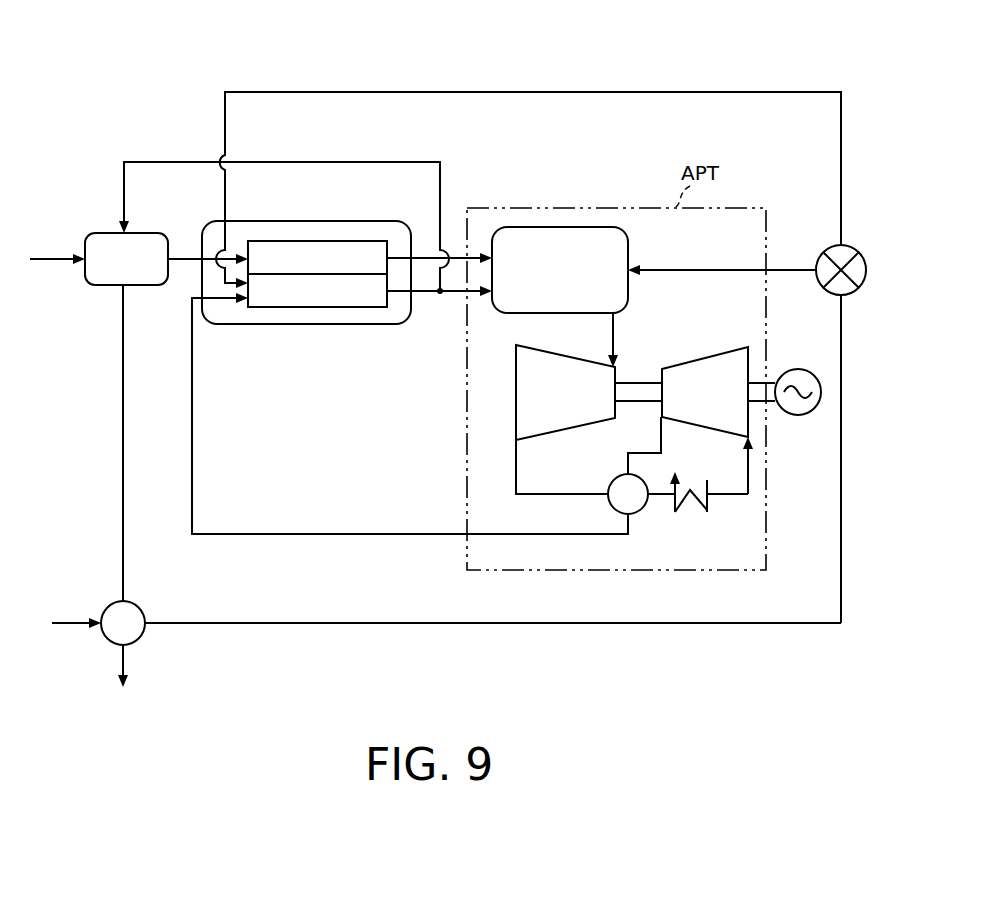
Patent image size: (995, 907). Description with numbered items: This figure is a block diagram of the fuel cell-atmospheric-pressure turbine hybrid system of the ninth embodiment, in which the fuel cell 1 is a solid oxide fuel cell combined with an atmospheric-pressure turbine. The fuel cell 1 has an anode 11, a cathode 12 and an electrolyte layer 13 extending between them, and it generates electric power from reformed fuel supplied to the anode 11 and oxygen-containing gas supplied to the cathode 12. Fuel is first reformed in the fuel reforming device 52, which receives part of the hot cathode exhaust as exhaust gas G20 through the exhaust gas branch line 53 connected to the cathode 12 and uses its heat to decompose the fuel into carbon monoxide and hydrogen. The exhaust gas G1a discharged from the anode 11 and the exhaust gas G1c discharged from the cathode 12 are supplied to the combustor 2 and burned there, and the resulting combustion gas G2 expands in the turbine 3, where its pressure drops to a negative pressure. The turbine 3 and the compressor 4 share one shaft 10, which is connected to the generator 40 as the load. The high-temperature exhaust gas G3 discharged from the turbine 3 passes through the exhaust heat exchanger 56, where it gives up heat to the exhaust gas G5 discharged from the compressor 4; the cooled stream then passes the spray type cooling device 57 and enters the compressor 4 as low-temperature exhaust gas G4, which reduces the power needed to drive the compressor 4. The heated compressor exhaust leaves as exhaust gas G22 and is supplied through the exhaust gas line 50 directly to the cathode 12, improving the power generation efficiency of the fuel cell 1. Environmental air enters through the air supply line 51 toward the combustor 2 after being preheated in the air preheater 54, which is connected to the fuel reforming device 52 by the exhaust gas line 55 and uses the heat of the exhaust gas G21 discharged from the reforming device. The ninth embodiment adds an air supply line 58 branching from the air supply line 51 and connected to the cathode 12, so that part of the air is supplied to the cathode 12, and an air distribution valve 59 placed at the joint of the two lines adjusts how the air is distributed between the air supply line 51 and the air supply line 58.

The fuel cell 1 is at (277, 325).
The combustor 2 is at (630, 243).
The turbine 3 is at (516, 376).
The compressor 4 is at (675, 366).
The shaft 10 is at (641, 401).
The anode 11 is at (302, 241).
The cathode 12 is at (357, 307).
The electrolyte layer 13 is at (378, 272).
The generator 40 is at (798, 415).
The exhaust gas line 50 is at (310, 534).
The air supply line 51 is at (403, 623).
The fuel reforming device 52 is at (110, 286).
The exhaust gas branch line 53 is at (137, 161).
The air preheater 54 is at (140, 639).
The exhaust gas line 55 is at (123, 456).
The exhaust heat exchanger 56 is at (637, 512).
The spray type cooling device 57 is at (683, 505).
The air supply line 58 is at (549, 92).
The air distribution valve 59 is at (828, 252).
The exhaust gas G1a is at (427, 256).
The exhaust gas G1c is at (447, 298).
The combustion gas G2 is at (613, 338).
The exhaust gas G3 is at (518, 470).
The exhaust gas G4 is at (733, 497).
The exhaust gas G5 is at (663, 444).
The exhaust gas G20 is at (185, 162).
The exhaust gas G21 is at (123, 405).
The exhaust gas G22 is at (400, 534).